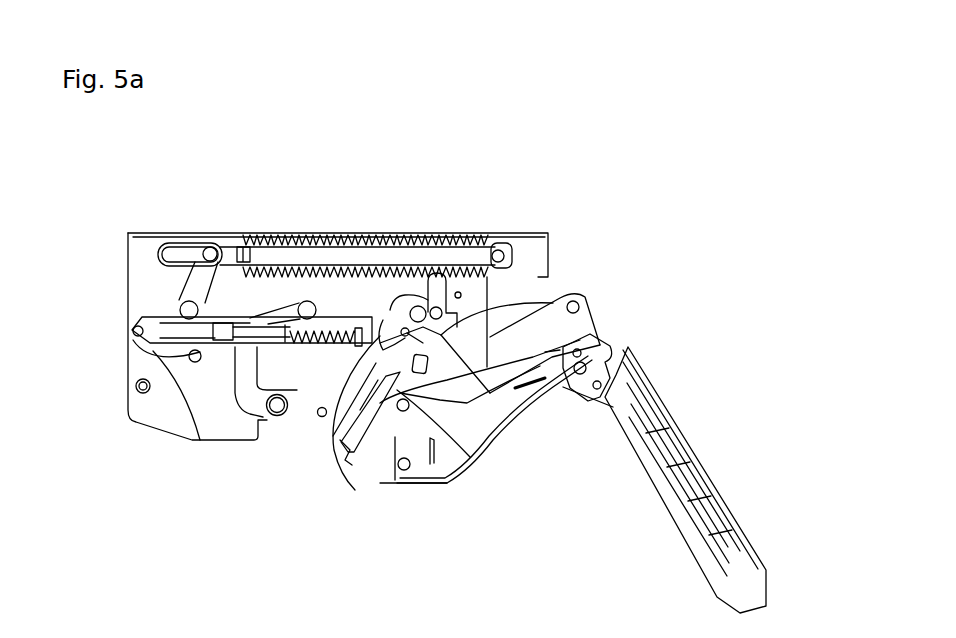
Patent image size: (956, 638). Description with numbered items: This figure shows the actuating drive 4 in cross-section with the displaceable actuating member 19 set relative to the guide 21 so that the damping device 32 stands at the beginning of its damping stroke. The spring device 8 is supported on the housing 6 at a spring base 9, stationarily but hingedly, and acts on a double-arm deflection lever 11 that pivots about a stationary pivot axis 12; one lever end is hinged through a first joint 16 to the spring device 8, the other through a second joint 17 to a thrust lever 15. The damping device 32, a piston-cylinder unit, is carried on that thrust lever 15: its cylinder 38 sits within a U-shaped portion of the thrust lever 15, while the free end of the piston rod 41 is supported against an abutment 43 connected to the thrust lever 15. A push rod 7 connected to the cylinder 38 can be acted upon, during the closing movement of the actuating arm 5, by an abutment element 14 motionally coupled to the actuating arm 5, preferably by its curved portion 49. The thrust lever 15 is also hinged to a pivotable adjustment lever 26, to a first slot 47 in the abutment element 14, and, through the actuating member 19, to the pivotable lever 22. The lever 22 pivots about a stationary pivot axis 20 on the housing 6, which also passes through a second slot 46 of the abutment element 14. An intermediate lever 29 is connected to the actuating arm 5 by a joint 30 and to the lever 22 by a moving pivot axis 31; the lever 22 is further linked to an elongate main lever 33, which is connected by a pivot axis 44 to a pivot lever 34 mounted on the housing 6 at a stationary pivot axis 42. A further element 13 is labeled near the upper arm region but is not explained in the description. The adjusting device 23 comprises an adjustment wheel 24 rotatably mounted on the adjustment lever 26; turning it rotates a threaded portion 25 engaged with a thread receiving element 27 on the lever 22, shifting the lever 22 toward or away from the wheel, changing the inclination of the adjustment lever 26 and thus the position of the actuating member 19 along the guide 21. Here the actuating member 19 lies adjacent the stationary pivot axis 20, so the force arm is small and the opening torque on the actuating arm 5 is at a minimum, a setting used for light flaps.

The actuating drive 4 is at (626, 182).
The actuating arm 5 is at (688, 447).
The housing 6 is at (538, 262).
The push rod 7 is at (303, 262).
The spring device 8 is at (383, 308).
The spring base 9 is at (499, 250).
The double-arm deflection lever 11 is at (197, 290).
The stationary pivot axis 12 is at (181, 312).
The pivot pin 13 is at (578, 307).
The abutment element 14 is at (590, 327).
The thrust lever 15 is at (362, 310).
The first joint 16 is at (208, 250).
The second joint 17 is at (134, 420).
The actuating member 19 is at (418, 306).
The stationary pivot axis 20 is at (447, 313).
The guide 21 is at (388, 308).
The pivotable lever 22 is at (468, 394).
The adjusting device 23 is at (343, 455).
The adjustment wheel 24 is at (351, 455).
The threaded portion 25 is at (447, 430).
The adjustment lever 26 is at (366, 440).
The thread receiving element 27 is at (395, 435).
The intermediate lever 29 is at (490, 413).
The joint 30 is at (570, 397).
The pivot axis 31 is at (404, 471).
The damping device 32 is at (338, 375).
The elongate main lever 33 is at (267, 428).
The pivot lever 34 is at (263, 313).
The cylinder 38 is at (194, 362).
The piston rod 41 is at (173, 350).
The stationary pivot axis 42 is at (304, 303).
The abutment 43 is at (133, 331).
The pivot axis 44 is at (275, 416).
The second slot 46 is at (455, 312).
The first slot 47 is at (393, 310).
The curved portion 49 is at (312, 357).